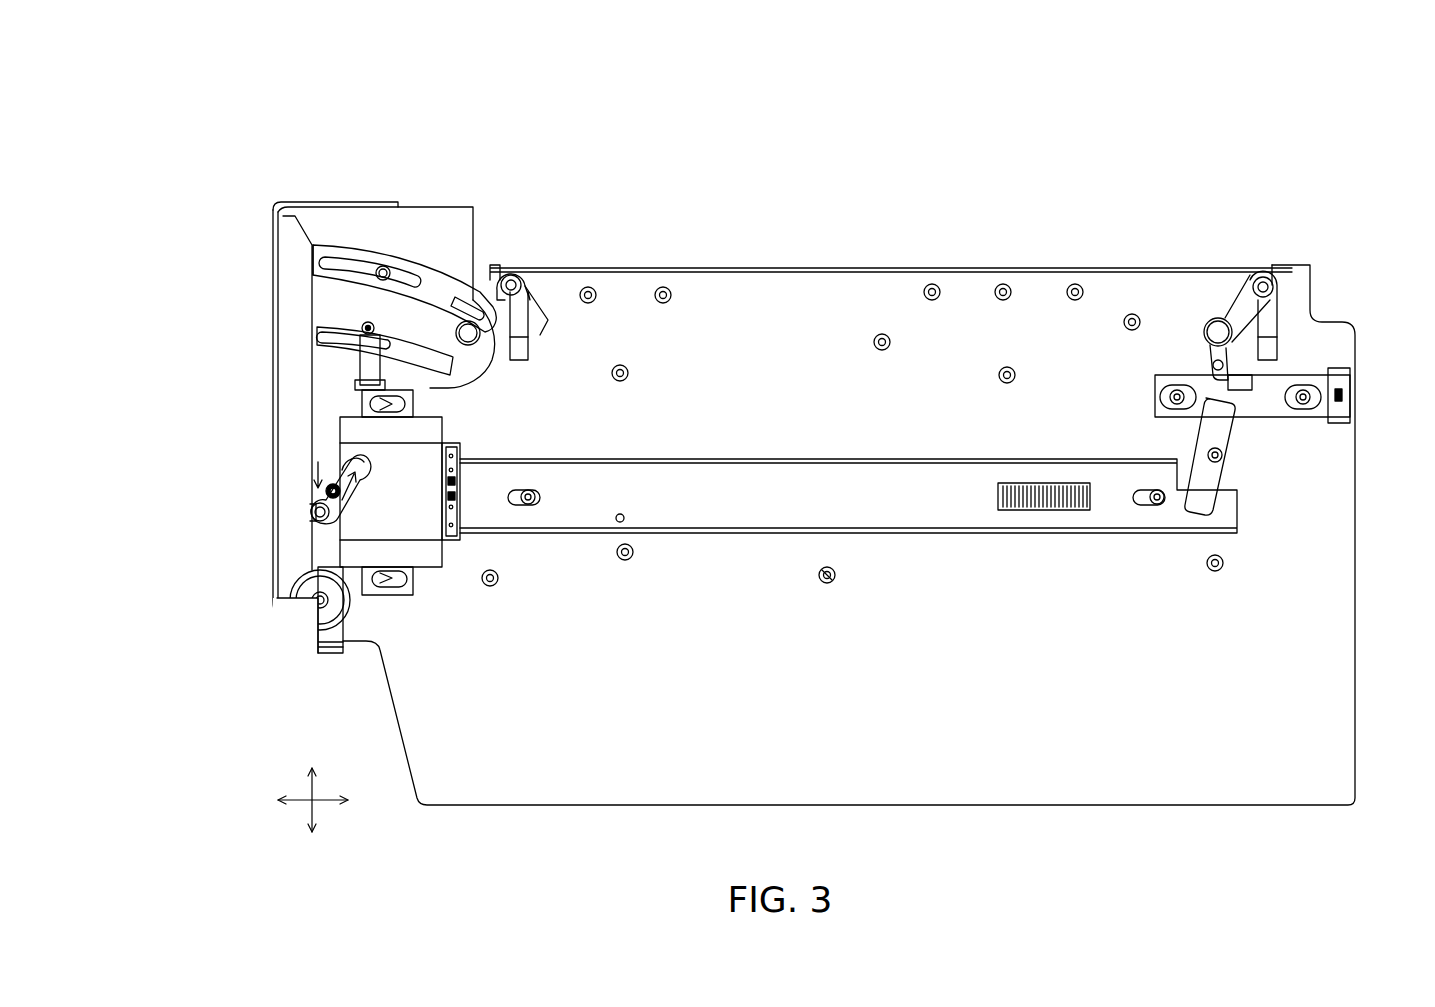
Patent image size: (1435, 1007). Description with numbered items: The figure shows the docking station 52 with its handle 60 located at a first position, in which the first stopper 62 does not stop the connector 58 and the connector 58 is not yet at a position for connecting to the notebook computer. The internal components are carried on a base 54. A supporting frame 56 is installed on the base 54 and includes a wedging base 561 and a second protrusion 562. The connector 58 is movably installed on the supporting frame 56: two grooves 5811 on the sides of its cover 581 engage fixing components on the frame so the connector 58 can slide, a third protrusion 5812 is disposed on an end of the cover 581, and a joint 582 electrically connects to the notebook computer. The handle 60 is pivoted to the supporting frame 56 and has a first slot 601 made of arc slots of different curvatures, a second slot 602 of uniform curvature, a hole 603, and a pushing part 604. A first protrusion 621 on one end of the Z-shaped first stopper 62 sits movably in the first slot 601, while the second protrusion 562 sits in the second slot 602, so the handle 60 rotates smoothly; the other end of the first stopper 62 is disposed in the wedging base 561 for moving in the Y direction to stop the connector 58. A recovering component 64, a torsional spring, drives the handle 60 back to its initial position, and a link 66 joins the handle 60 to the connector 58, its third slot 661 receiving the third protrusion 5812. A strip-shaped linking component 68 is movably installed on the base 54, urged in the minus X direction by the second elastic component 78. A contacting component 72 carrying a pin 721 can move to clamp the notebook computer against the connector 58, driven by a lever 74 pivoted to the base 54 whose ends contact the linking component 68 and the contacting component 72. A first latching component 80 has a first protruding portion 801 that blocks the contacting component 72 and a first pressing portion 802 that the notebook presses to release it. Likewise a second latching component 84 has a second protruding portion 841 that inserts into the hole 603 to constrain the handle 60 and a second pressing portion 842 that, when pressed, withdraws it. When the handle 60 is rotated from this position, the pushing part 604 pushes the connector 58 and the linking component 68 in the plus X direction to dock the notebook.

The docking station 52 is at (1221, 138).
The base 54 is at (471, 793).
The supporting frame 56 is at (518, 132).
The wedging base 561 is at (455, 286).
The second protrusion 562 is at (386, 267).
The connector 58 is at (148, 457).
The cover 581 is at (212, 420).
The grooves 5811 is at (366, 406).
The third protrusion 5812 is at (318, 492).
The joint 582 is at (448, 545).
The handle 60 is at (842, 130).
The first slot 601 is at (460, 370).
The second slot 602 is at (382, 404).
The hole 603 is at (488, 354).
The pushing part 604 is at (345, 423).
The first stopper 62 is at (358, 336).
The first protrusion 621 is at (363, 326).
The recovering component 64 is at (332, 616).
The link 66 is at (320, 520).
The third slot 661 is at (352, 482).
The linking component 68 is at (903, 482).
The contacting component 72 is at (1350, 360).
The pin 721 is at (1347, 395).
The lever 74 is at (1232, 437).
The second elastic component 78 is at (1067, 497).
The first latching component 80 is at (1272, 238).
The first protruding portion 801 is at (1228, 363).
The first pressing portion 802 is at (1273, 347).
The second latching component 84 is at (580, 228).
The second protruding portion 841 is at (518, 347).
The second pressing portion 842 is at (472, 333).